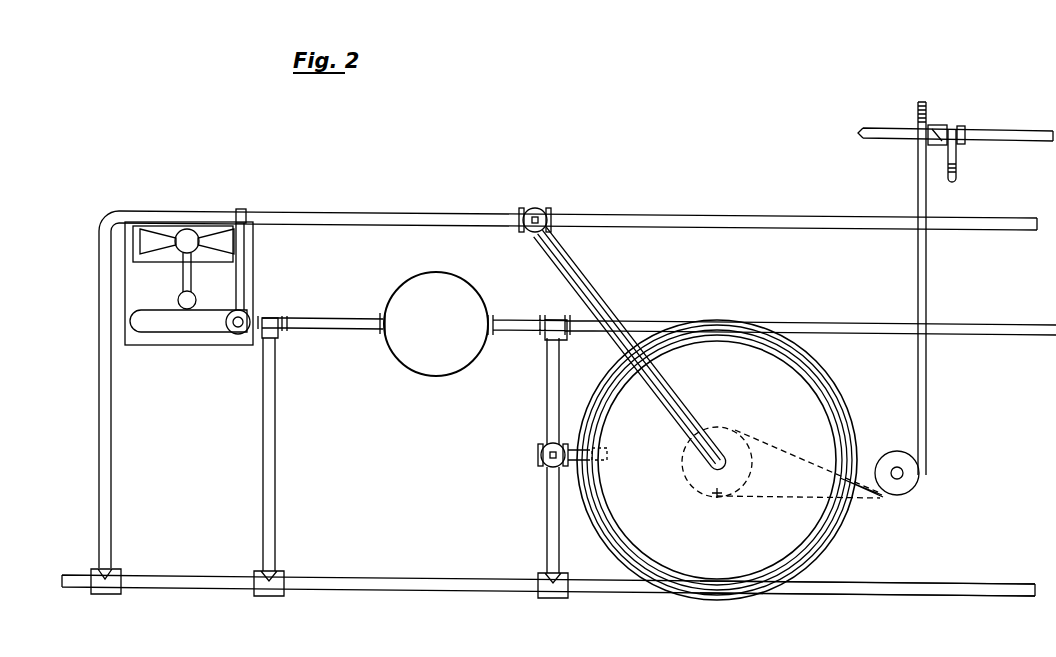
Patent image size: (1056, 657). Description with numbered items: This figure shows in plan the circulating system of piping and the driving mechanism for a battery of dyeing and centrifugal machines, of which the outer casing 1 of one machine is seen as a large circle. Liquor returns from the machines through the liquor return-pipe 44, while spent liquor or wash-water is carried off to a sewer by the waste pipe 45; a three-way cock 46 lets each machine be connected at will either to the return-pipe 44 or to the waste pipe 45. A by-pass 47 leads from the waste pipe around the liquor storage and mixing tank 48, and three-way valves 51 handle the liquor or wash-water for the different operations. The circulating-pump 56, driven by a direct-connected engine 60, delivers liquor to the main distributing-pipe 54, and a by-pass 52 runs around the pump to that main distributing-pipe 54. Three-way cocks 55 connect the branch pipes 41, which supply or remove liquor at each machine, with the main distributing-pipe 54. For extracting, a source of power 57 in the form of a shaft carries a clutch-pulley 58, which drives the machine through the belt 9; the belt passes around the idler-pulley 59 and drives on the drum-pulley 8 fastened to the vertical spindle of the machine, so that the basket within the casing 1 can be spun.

The outer casing 1 is at (717, 460).
The hub-pulley 8 is at (781, 478).
The belt 9 is at (921, 404).
The pipe 41 is at (612, 286).
The liquor return-pipe 44 is at (1012, 332).
The liquor or wash-water pipe 45 is at (867, 576).
The three-way cock 46 is at (538, 452).
The by-pass 47 is at (405, 575).
The liquor storage and mixing tank 48 is at (436, 324).
The three-way valves 51 is at (121, 577).
The by-pass 52 is at (73, 393).
The main distributing-pipe 54 is at (1024, 226).
The three-way cocks 55 is at (546, 198).
The circulating-pump 56 is at (186, 333).
The source of power 57 is at (1011, 135).
The clutch-pulley 58 is at (947, 139).
The idler-pulley 59 is at (905, 465).
The direct-connected engine 60 is at (188, 229).